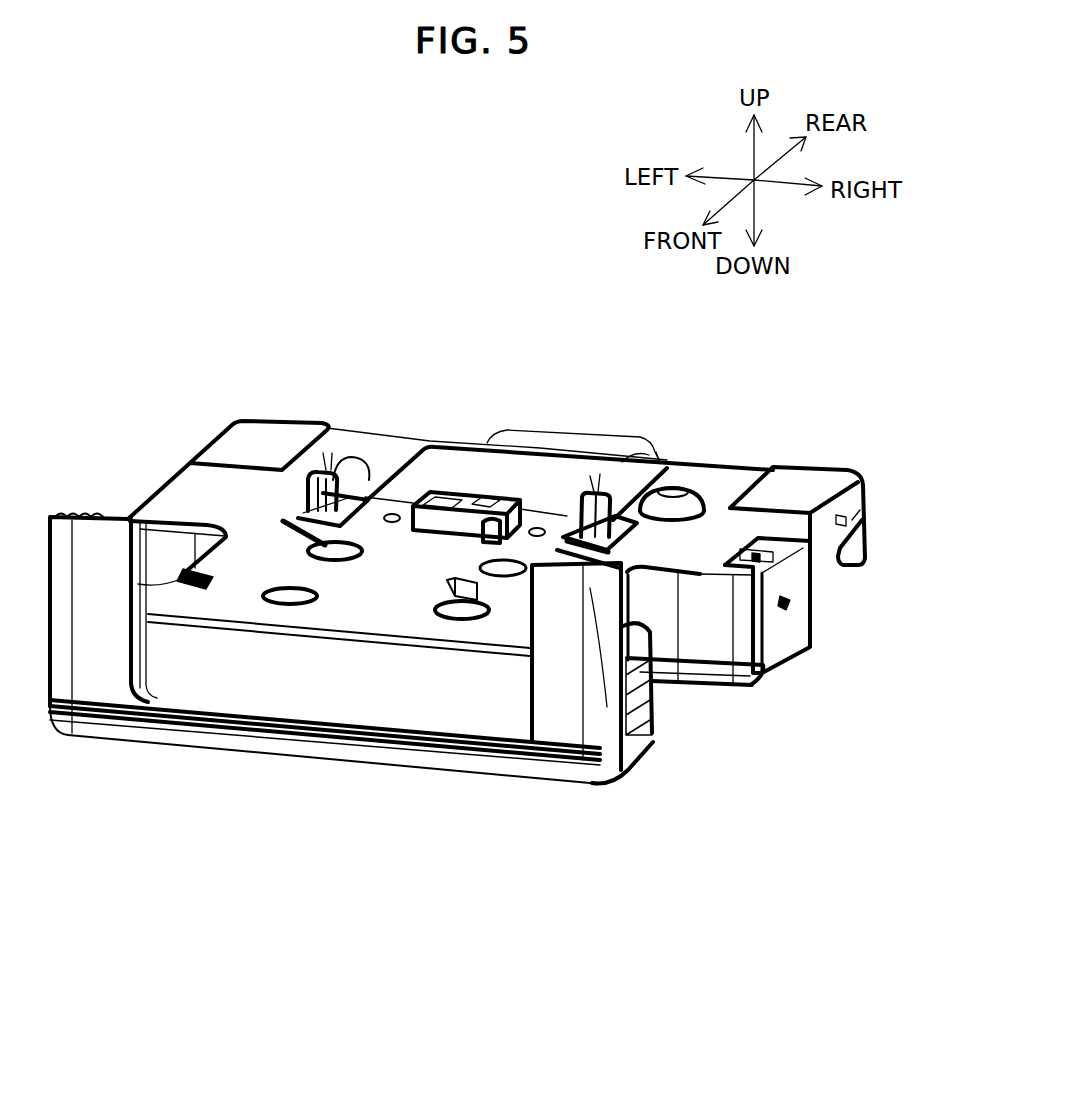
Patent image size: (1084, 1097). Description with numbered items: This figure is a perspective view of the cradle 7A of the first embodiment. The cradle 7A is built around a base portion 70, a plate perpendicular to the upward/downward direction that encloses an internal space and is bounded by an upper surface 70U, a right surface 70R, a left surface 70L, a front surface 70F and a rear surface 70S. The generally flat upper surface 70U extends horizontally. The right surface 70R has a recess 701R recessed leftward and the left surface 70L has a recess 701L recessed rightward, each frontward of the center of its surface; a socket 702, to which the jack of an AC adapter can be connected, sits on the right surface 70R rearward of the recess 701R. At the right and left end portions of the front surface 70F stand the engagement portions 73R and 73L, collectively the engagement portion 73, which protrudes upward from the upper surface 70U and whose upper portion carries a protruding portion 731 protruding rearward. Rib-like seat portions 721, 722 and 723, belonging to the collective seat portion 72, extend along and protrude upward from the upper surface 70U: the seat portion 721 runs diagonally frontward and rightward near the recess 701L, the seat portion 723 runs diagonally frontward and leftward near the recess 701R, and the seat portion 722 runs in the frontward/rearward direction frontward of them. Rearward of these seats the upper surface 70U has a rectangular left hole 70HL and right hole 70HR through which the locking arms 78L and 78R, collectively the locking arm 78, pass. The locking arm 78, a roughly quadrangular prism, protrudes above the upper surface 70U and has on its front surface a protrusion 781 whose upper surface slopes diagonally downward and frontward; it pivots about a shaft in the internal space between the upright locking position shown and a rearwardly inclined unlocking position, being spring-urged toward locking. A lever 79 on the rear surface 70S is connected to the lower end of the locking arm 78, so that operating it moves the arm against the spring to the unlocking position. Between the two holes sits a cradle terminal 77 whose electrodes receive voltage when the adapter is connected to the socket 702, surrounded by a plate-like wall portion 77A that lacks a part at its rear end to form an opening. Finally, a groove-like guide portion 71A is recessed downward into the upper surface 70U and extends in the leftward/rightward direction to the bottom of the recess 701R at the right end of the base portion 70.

The cradle 7A is at (560, 344).
The base portion 70 is at (733, 464).
The upper surface 70U is at (197, 500).
The rear surface 70S is at (478, 430).
The front surface 70F is at (330, 663).
The left surface 70L is at (158, 466).
The right surface 70R is at (810, 616).
The left hole 70HL is at (357, 467).
The right hole 70HR is at (635, 455).
The recess 701L is at (172, 541).
The recess 701R is at (675, 621).
The socket 702 is at (846, 587).
The guide portion 71A is at (507, 614).
The seat portion 72 is at (276, 869).
The seat portion 721 is at (262, 538).
The seat portion 722 is at (213, 582).
The seat portion 723 is at (555, 548).
The engagement portion 73 is at (535, 874).
The engagement portion 73L is at (86, 660).
The engagement portion 73R is at (545, 690).
The protruding portion 731 is at (607, 707).
The cradle terminal 77 is at (465, 490).
The wall portion 77A is at (455, 522).
The locking arm 78 is at (356, 318).
The locking arm 78L is at (318, 468).
The locking arm 78R is at (618, 503).
The protrusion 781 is at (300, 512).
The lever 79 is at (592, 490).